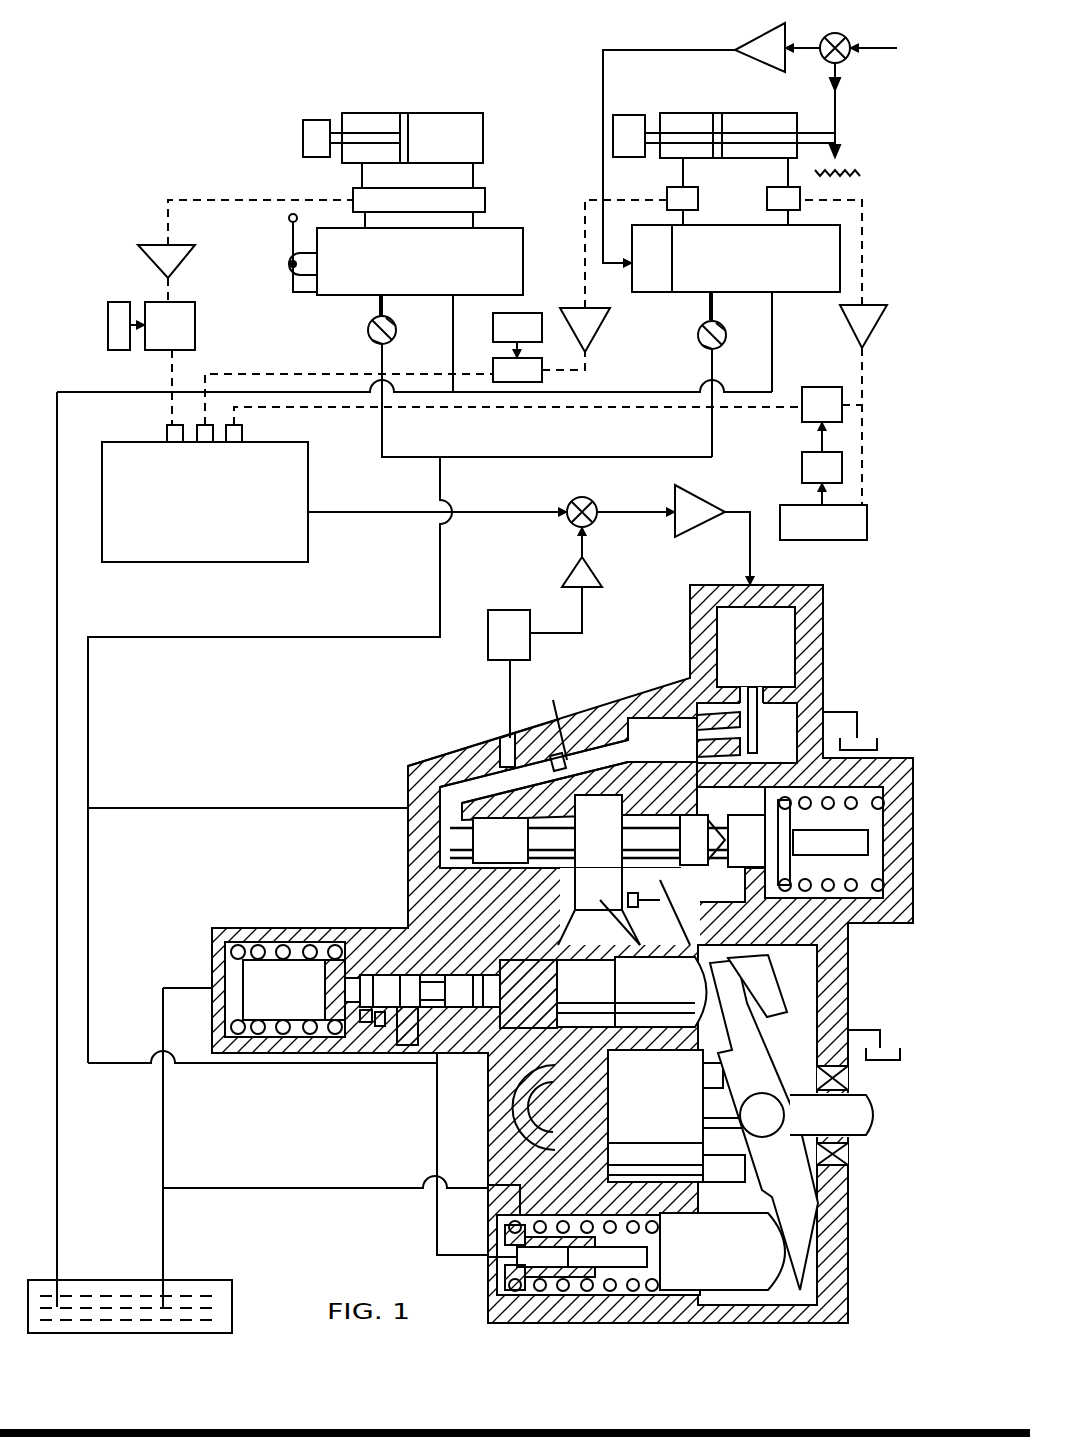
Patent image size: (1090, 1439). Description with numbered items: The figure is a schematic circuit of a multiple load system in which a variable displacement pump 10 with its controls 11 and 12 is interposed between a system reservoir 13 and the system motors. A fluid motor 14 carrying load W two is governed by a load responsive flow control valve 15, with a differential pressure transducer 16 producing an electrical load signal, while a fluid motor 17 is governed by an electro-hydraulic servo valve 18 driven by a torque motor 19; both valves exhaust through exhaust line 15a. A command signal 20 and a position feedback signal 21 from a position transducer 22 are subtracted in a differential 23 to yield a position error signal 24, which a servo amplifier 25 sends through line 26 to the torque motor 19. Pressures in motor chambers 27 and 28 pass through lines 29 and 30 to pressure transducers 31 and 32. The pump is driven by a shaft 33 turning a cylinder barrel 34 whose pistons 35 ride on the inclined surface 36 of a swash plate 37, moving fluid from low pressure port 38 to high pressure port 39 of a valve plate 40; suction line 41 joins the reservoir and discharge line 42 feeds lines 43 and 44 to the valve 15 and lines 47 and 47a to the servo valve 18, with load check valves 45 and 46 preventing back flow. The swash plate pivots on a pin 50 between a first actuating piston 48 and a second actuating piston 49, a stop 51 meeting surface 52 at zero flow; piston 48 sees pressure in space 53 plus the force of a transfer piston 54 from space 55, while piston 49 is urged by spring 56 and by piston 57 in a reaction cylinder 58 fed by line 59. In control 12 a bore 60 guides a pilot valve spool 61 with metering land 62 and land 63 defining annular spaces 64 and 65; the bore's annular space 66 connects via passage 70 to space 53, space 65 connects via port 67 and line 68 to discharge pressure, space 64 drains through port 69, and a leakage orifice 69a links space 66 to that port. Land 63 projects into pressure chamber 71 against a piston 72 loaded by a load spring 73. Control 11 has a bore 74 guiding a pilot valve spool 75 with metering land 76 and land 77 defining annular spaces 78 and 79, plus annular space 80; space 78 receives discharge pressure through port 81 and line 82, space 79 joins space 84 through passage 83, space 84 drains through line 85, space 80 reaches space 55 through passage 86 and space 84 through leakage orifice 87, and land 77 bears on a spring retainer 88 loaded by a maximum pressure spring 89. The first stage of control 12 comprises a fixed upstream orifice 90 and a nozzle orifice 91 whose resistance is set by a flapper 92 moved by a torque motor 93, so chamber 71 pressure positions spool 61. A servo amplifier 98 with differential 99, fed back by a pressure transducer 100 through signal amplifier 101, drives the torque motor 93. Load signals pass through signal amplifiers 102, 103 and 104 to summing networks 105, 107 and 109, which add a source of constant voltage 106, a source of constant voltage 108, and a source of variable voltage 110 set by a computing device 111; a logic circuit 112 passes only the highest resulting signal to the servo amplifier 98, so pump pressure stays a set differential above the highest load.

The variable displacement pump 10 is at (845, 1225).
The pump control 11 is at (297, 1057).
The pump control 12 is at (415, 848).
The system reservoir 13 is at (232, 1304).
The fluid motor 14 is at (462, 120).
The load responsive flow control valve 15 is at (406, 303).
The exhaust line 15a is at (58, 1090).
The differential pressure transducer 16 is at (419, 208).
The fluid motor 17 is at (702, 118).
The electro-hydraulic servo valve 18 is at (736, 308).
The torque motor 19 is at (655, 265).
The electrical command signal 20 is at (890, 48).
The position feedback signal 21 is at (838, 106).
The position transducer 22 is at (838, 165).
The differential 23 is at (846, 60).
The position error signal 24 is at (812, 50).
The servo amplifier 25 is at (758, 62).
The line 26 is at (603, 100).
The motor chamber 27 is at (756, 148).
The motor chamber 28 is at (685, 148).
The line 29 is at (683, 174).
The line 30 is at (800, 195).
The pressure transducer 31 is at (690, 200).
The pressure transducer 32 is at (770, 197).
The shaft 33 is at (831, 1115).
The cylinder barrel 34 is at (655, 1096).
The pistons 35 is at (655, 1162).
The inclined surface 36 is at (752, 1172).
The swash plate 37 is at (768, 1054).
The low pressure port 38 is at (534, 1107).
The high pressure port 39 is at (545, 1112).
The valve plate 40 is at (555, 1185).
The suction line 41 is at (313, 1188).
The discharge line 42 is at (160, 1050).
The line 43 is at (382, 440).
The line 44 is at (368, 326).
The load check valve 45 is at (730, 326).
The load check valve 46 is at (400, 320).
The line 47 is at (722, 432).
The line 47a is at (700, 322).
The first actuating piston 48 is at (661, 992).
The second actuating piston 49 is at (641, 1254).
The pin 50 is at (762, 1115).
The stop 51 is at (760, 978).
The surface 52 is at (810, 1000).
The space 53 is at (586, 993).
The transfer piston 54 is at (528, 994).
The space 55 is at (531, 1009).
The spring 56 is at (607, 1259).
The piston 57 is at (648, 1255).
The reaction cylinder 58 is at (550, 1257).
The line 59 is at (433, 1156).
The bore 60 is at (680, 870).
The pilot valve spool 61 is at (492, 850).
The metering land 62 is at (598, 831).
The land 63 is at (702, 840).
The annular space 64 is at (660, 826).
The annular space 65 is at (552, 866).
The annular space 66 is at (629, 906).
The port 67 is at (424, 765).
The line 68 is at (285, 808).
The port 69 is at (660, 902).
The leakage orifice 69a is at (660, 916).
The passage 70 is at (598, 935).
The pressure chamber 71 is at (568, 760).
The piston 72 is at (750, 841).
The load spring 73 is at (808, 800).
The bore 74 is at (440, 975).
The pilot valve spool 75 is at (440, 1015).
The metering land 76 is at (425, 1047).
The land 77 is at (366, 1024).
The annular space 78 is at (422, 972).
The annular space 79 is at (405, 1047).
The annular space 80 is at (378, 972).
The port 81 is at (440, 1073).
The line 82 is at (478, 1185).
The passage 83 is at (338, 958).
The space 84 is at (285, 989).
The line 85 is at (162, 1130).
The passage 86 is at (512, 908).
The leakage orifice 87 is at (380, 1028).
The spring retainer 88 is at (348, 975).
The maximum pressure spring 89 is at (258, 945).
The fixed upstream orifice 90 is at (556, 723).
The nozzle orifice 91 is at (758, 752).
The flapper 92 is at (758, 730).
The torque motor 93 is at (756, 647).
The servo amplifier 98 is at (710, 498).
The differential 99 is at (584, 497).
The pressure transducer 100 is at (510, 674).
The signal amplifier 101 is at (600, 578).
The signal amplifier 102 is at (158, 250).
The signal amplifier 103 is at (600, 330).
The signal amplifier 104 is at (852, 328).
The summing network 105 is at (170, 363).
The source of constant voltage 106 is at (108, 324).
The summing network 107 is at (539, 367).
The source of constant voltage 108 is at (517, 335).
The summing network 109 is at (832, 404).
The source of variable voltage 110 is at (824, 452).
The computing device 111 is at (823, 511).
The logic circuit 112 is at (452, 468).